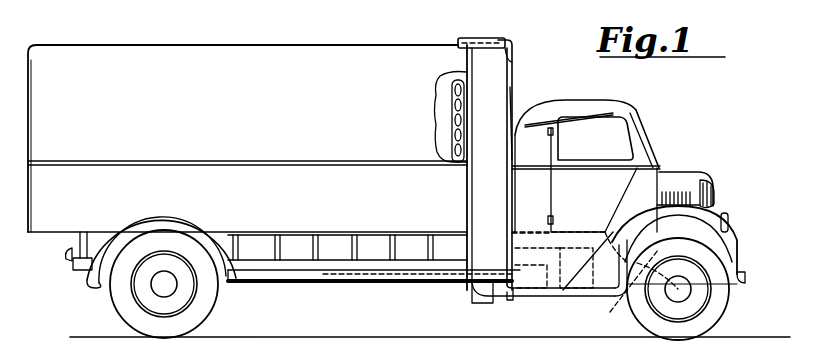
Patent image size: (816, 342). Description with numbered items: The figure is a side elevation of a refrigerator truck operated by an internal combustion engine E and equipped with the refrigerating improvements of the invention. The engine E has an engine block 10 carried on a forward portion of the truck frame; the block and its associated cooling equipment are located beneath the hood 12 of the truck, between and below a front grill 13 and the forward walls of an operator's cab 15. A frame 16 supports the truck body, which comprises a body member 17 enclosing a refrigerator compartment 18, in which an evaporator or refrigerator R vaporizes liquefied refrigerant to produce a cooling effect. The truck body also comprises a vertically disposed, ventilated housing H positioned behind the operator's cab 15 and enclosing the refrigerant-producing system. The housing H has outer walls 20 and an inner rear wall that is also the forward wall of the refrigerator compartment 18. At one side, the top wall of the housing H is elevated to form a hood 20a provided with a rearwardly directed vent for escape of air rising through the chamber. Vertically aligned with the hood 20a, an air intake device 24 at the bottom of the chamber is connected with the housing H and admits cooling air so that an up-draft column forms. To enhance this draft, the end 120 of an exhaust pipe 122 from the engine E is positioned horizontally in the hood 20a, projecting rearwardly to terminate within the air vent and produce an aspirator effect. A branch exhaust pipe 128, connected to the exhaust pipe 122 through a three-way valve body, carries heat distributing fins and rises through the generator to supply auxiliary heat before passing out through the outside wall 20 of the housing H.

The engine block 10 is at (729, 222).
The hood 12 is at (685, 170).
The front grill 13 is at (714, 195).
The operator's cab 15 is at (583, 104).
The frame 16 is at (257, 268).
The body member 17 is at (278, 67).
The refrigerator compartment 18 is at (447, 86).
The evaporator or refrigerator R is at (451, 104).
The outer walls 20 is at (500, 73).
The hood 20a is at (472, 38).
The end of exhaust pipe 120 is at (506, 38).
The ventilated housing H is at (517, 57).
The exhaust pipe 122 is at (513, 87).
The branch exhaust pipe 128 is at (507, 297).
The air intake device 24 is at (474, 290).
The internal combustion engine E is at (639, 292).